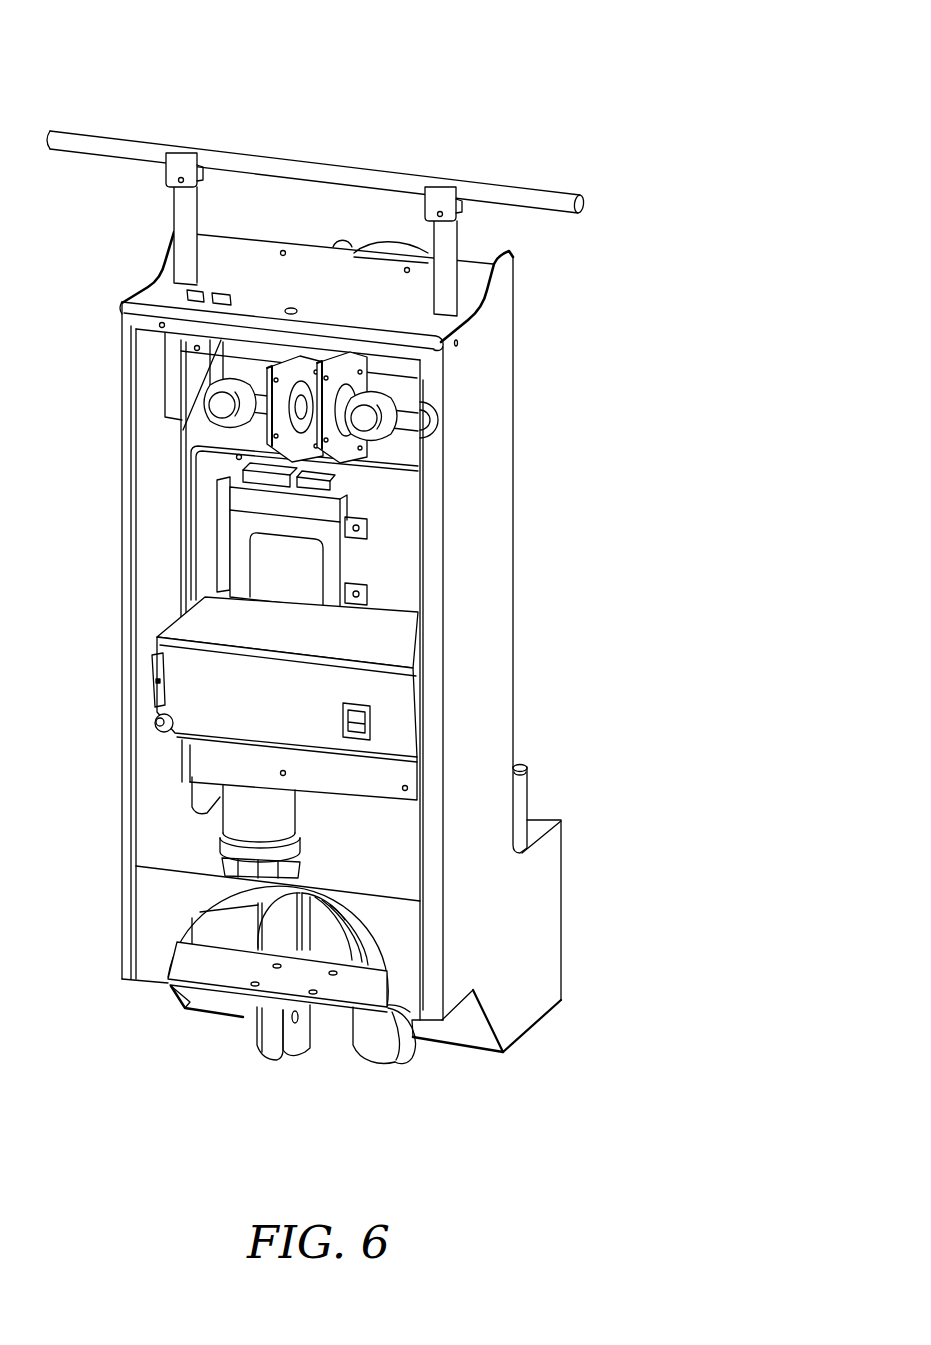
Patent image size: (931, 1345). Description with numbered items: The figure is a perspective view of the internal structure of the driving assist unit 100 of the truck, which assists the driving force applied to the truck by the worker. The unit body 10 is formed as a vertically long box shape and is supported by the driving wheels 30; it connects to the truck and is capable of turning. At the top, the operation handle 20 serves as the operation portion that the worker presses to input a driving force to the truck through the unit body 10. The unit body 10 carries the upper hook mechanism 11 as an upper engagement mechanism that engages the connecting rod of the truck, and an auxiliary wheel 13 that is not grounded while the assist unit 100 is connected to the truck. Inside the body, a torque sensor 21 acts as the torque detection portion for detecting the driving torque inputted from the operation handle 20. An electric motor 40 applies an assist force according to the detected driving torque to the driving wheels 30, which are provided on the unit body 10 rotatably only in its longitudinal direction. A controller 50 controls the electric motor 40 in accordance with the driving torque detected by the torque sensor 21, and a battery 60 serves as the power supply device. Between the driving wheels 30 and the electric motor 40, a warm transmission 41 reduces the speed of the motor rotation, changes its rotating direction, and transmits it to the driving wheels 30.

The assist unit 100 is at (556, 102).
The unit body 10 is at (472, 517).
The upper hook mechanism 11 is at (372, 231).
The auxiliary wheel 13 is at (273, 1040).
The operation handle 20 is at (480, 191).
The torque sensor 21 is at (222, 403).
The driving wheels 30 is at (320, 1033).
The electric motor 40 is at (243, 822).
The warm transmission 41 is at (219, 942).
The controller 50 is at (262, 560).
The battery 60 is at (212, 683).